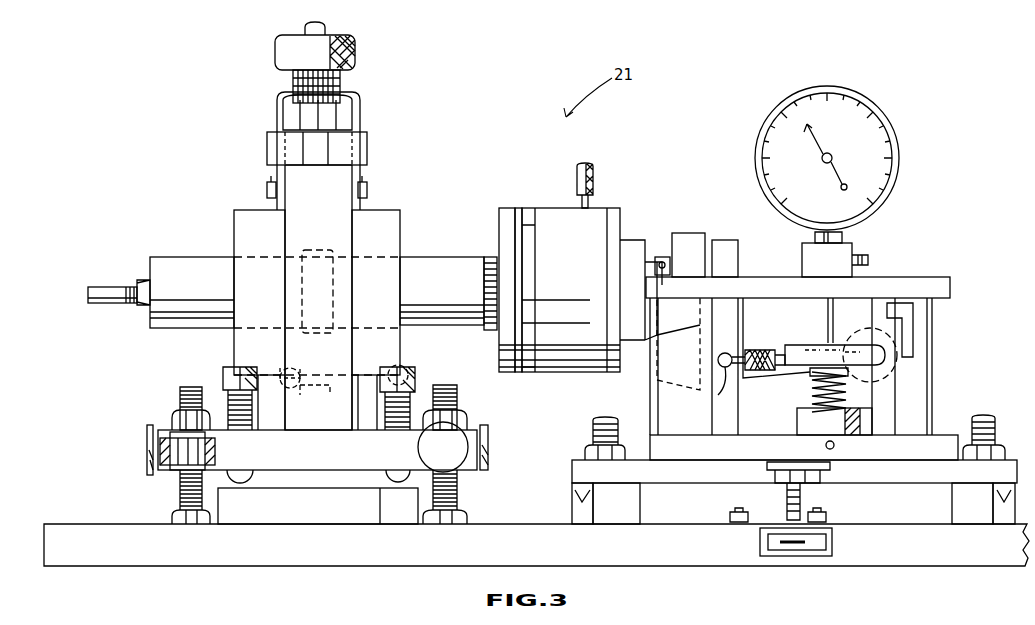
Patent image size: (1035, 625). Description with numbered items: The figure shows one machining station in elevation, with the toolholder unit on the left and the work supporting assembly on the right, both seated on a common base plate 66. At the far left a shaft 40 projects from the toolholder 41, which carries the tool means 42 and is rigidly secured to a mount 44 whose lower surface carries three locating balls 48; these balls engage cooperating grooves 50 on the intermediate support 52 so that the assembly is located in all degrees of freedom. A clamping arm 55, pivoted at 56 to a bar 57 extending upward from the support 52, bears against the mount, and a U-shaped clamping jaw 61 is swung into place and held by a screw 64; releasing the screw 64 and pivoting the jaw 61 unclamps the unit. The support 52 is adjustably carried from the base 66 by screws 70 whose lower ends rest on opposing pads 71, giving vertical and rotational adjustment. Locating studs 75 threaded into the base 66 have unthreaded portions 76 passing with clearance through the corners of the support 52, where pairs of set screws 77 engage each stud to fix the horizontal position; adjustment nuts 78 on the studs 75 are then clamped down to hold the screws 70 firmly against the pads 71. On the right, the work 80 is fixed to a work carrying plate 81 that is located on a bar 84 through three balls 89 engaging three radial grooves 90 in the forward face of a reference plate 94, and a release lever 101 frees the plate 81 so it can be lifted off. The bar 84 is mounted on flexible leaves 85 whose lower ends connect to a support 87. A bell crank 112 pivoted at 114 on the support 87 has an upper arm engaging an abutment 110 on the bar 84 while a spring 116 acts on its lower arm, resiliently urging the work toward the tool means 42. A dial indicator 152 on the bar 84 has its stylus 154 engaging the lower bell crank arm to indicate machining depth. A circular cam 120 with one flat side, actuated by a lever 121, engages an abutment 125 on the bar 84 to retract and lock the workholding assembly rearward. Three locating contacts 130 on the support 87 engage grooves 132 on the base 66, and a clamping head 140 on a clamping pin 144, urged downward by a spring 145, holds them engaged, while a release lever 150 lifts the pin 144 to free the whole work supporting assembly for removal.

The shaft 40 is at (104, 283).
The toolholder 41 is at (427, 258).
The tool means 42 is at (492, 243).
The mount 44 is at (385, 215).
The locating balls 48 is at (415, 362).
The grooves 50 is at (315, 390).
The intermediate support 52 is at (340, 461).
The clamping arm 55 is at (367, 150).
The pivot 56 is at (265, 190).
The bar 57 is at (326, 193).
The U-shaped clamping jaw 61 is at (358, 105).
The screw 64 is at (355, 45).
The base plate 66 is at (380, 560).
The screws 70 is at (228, 380).
The pads 71 is at (312, 486).
The locating studs 75 is at (180, 395).
The unthreaded portions 76 is at (188, 458).
The set screws 77 is at (147, 445).
The adjustment nuts 78 is at (470, 430).
The work 80 is at (503, 207).
The work carrying plate 81 is at (520, 208).
The bar 84 is at (880, 272).
The flexible leaves 85 is at (650, 372).
The support 87 is at (995, 440).
The balls 89 is at (522, 323).
The grooves 90 is at (525, 330).
The reference plate 94 is at (530, 372).
The release lever 101 is at (595, 173).
The abutment 110 is at (705, 270).
The bell crank 112 is at (738, 310).
The pivot 114 is at (718, 395).
The spring 116 is at (812, 388).
The circular cam 120 is at (865, 333).
The lever 121 is at (760, 348).
The abutment 125 is at (915, 330).
The locating contacts 130 is at (572, 470).
The grooves 132 is at (572, 498).
The clamping head 140 is at (768, 466).
The clamping pin 144 is at (832, 492).
The spring 145 is at (830, 465).
The release lever 150 is at (832, 540).
The dial indicator 152 is at (898, 185).
The stylus 154 is at (825, 320).